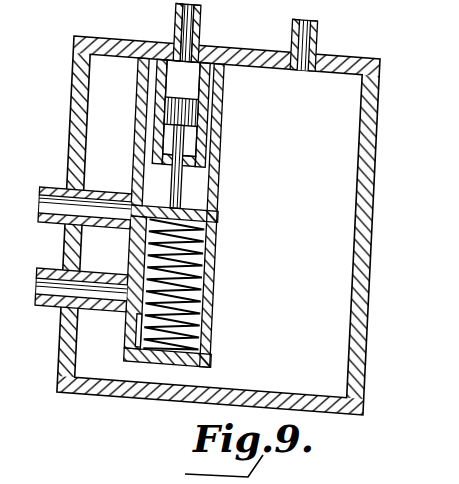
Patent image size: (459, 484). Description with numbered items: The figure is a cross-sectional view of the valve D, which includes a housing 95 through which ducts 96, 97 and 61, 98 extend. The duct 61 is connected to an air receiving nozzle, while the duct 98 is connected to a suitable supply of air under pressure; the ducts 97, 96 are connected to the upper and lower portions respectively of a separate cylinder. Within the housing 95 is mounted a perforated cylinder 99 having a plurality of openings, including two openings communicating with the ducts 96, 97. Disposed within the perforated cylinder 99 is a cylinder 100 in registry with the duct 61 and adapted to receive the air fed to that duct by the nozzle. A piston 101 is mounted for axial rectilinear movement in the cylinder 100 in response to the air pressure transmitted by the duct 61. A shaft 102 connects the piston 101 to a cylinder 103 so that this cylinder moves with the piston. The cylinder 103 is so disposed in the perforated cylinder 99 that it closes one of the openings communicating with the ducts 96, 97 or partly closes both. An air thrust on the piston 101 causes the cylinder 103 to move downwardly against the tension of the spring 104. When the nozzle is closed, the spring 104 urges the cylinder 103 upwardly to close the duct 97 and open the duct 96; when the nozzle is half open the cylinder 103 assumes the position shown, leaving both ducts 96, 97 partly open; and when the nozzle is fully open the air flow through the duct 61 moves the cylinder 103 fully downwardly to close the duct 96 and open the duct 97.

The duct 61 is at (196, 31).
The housing 95 is at (366, 212).
The duct 96 is at (44, 313).
The duct 97 is at (45, 222).
The duct 98 is at (318, 36).
The perforated cylinder 99 is at (213, 158).
The cylinder 100 is at (203, 82).
The piston 101 is at (181, 113).
The shaft 102 is at (176, 192).
The cylinder 103 is at (205, 243).
The spring 104 is at (178, 318).
The valve D is at (120, 403).